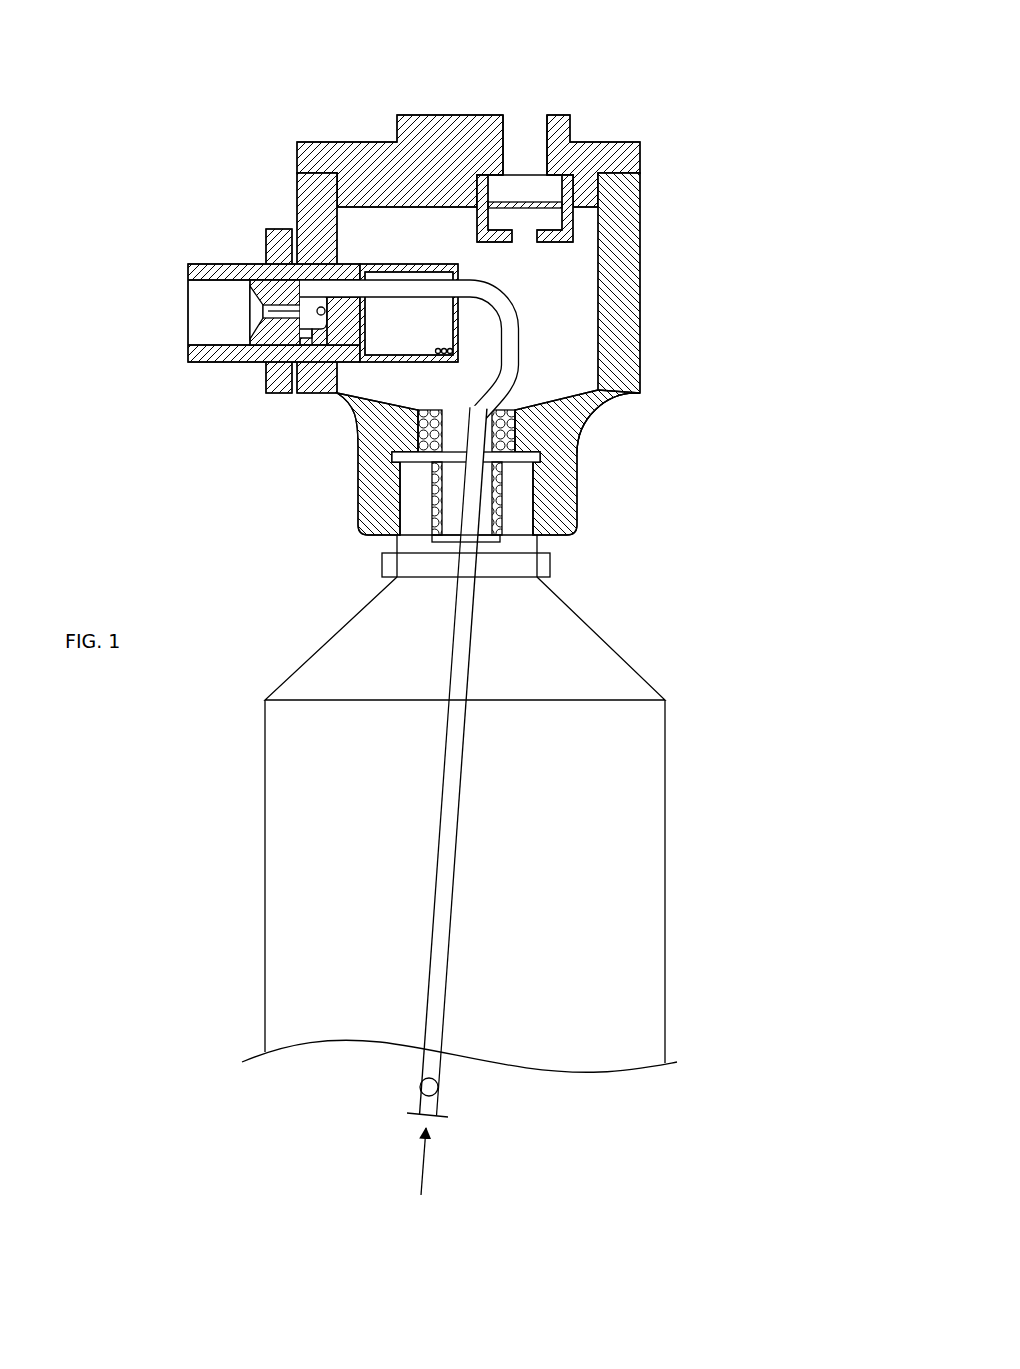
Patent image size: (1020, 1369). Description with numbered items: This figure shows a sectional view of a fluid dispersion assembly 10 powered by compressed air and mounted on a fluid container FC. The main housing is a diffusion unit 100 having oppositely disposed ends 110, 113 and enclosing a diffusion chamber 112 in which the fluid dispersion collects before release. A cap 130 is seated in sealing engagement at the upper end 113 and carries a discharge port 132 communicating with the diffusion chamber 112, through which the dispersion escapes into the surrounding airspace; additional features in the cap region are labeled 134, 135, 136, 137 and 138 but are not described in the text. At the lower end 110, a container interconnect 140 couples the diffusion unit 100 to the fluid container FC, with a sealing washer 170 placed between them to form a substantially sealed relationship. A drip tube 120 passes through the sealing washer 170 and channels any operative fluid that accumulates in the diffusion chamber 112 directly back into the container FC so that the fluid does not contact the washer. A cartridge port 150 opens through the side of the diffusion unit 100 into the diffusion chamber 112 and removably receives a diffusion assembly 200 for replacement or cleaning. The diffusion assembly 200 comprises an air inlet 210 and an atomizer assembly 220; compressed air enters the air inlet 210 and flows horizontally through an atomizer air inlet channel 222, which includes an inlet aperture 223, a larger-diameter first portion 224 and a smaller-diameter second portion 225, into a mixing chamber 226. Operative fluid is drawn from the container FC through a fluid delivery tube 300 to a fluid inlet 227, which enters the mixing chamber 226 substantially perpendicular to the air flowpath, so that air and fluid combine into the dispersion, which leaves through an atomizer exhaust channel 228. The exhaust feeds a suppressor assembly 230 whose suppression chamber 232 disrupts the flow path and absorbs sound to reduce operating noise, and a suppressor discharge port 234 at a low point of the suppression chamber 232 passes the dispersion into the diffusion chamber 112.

The fluid dispersion assembly 10 is at (178, 107).
The diffusion unit 100 is at (633, 402).
The oppositely disposed end 110 is at (345, 448).
The diffusion chamber 112 is at (578, 427).
The oppositely disposed end 113 is at (327, 108).
The drip tube 120 is at (432, 493).
The cap 130 is at (415, 115).
The discharge port 132 is at (540, 105).
The passage 134 is at (466, 221).
The side wall 135 is at (598, 277).
The retainer 136 is at (563, 202).
The inlet 137 is at (528, 167).
The filter 138 is at (572, 230).
The container interconnect 140 is at (567, 545).
The cartridge port 150 is at (345, 257).
The sealing washer 170 is at (577, 468).
The diffusion assembly 200 is at (267, 267).
The air inlet 210 is at (160, 317).
The atomizer assembly 220 is at (257, 290).
The atomizer air inlet channel 222 is at (235, 302).
The inlet aperture 223 is at (235, 325).
The first portion 224 is at (270, 313).
The second portion 225 is at (320, 352).
The mixing chamber 226 is at (303, 330).
The fluid inlet 227 is at (280, 282).
The atomizer exhaust channel 228 is at (298, 288).
The suppressor assembly 230 is at (462, 332).
The suppression chamber 232 is at (427, 317).
The suppressor discharge port 234 is at (447, 367).
The fluid delivery tube 300 is at (462, 775).
The fluid container FC is at (665, 882).